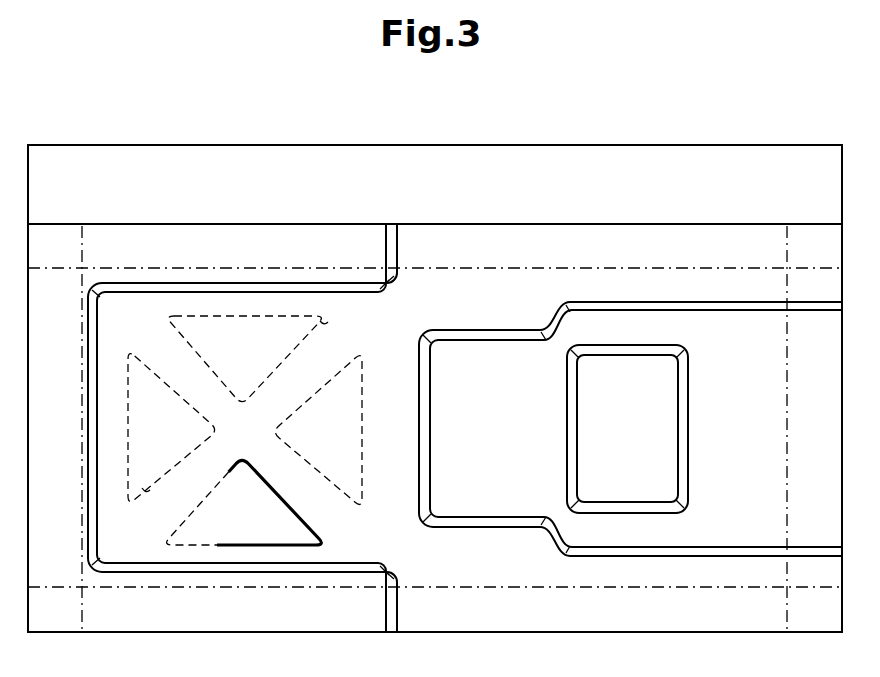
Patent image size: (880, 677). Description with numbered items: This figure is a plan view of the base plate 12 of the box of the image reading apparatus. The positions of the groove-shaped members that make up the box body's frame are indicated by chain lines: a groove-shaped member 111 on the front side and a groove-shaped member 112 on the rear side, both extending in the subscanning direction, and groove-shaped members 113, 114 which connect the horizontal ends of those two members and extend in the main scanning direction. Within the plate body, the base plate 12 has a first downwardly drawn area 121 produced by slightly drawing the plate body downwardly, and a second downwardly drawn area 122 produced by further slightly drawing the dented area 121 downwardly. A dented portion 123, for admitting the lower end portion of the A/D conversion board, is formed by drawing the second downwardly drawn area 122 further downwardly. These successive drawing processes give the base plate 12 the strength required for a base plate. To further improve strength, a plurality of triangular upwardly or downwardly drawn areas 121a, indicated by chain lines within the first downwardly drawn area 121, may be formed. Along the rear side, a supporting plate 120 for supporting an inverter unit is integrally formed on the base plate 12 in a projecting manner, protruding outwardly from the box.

The base plate 12 is at (450, 214).
The supporting plate 120 is at (580, 207).
The groove-shaped member 112 is at (313, 262).
The groove-shaped member 111 is at (313, 627).
The groove-shaped member 113 is at (75, 437).
The groove-shaped member 114 is at (836, 441).
The first downwardly drawn area 121 is at (266, 446).
The triangular drawn areas 121a is at (283, 332).
The second downwardly drawn area 122 is at (503, 444).
The dented portion 123 is at (650, 444).